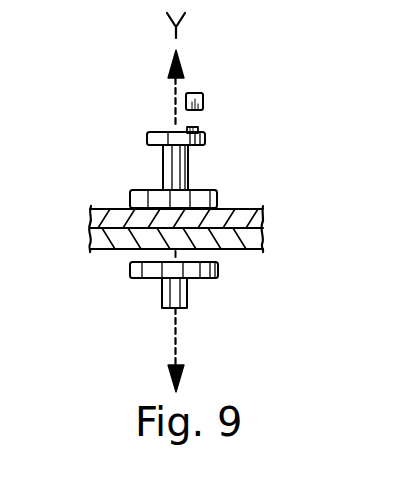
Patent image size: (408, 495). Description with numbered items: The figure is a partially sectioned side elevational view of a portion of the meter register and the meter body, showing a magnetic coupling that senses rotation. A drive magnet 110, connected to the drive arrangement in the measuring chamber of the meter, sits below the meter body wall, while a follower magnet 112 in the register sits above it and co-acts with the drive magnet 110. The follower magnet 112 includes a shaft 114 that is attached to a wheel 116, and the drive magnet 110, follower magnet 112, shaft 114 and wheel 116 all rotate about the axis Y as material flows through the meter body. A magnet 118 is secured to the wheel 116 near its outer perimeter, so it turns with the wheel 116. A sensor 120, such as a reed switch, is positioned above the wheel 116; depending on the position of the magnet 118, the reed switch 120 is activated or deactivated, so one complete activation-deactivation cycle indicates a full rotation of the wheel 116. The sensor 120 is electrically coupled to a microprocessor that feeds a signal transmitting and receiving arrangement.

The drive magnet 110 is at (218, 268).
The follower magnet 112 is at (130, 198).
The shaft 114 is at (163, 168).
The wheel 116 is at (206, 141).
The magnet 118 is at (198, 130).
The sensor 120 is at (203, 100).